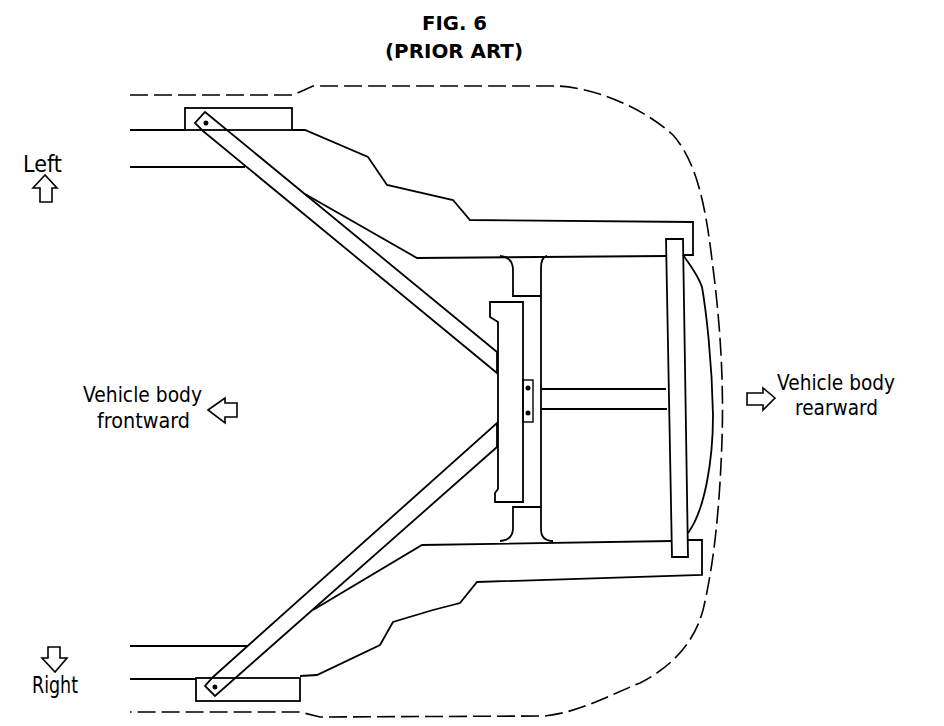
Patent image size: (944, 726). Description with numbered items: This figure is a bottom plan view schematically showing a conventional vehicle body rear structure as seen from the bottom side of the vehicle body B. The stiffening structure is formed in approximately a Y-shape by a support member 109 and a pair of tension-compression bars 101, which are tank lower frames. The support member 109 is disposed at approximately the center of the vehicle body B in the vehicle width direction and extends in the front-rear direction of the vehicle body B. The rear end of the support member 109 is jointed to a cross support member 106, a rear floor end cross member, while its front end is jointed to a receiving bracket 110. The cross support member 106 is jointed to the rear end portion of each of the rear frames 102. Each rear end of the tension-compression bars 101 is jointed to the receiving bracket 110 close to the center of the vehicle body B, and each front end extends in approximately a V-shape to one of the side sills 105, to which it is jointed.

The tension-compression bar 101 is at (375, 262).
The rear frame 102 is at (588, 233).
The side sill 105 is at (169, 158).
The cross support member 106 is at (693, 352).
The support member 109 is at (603, 398).
The receiving bracket 110 is at (545, 331).
The vehicle body B is at (692, 165).